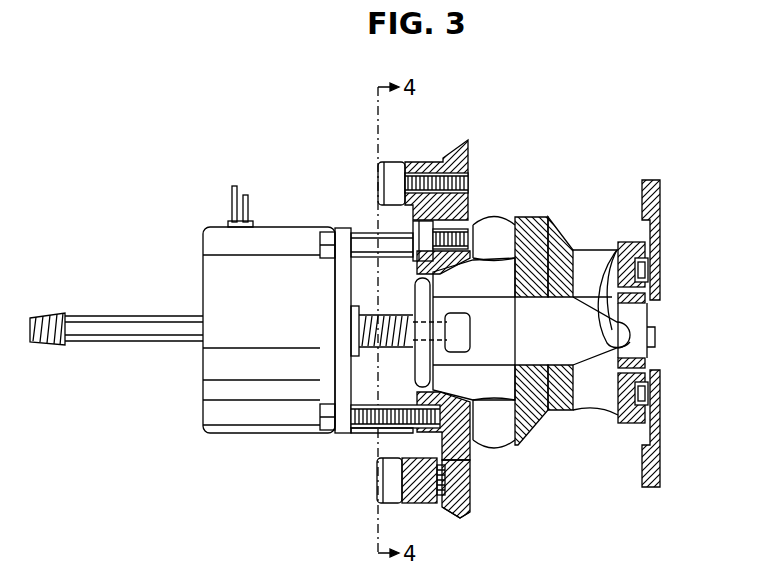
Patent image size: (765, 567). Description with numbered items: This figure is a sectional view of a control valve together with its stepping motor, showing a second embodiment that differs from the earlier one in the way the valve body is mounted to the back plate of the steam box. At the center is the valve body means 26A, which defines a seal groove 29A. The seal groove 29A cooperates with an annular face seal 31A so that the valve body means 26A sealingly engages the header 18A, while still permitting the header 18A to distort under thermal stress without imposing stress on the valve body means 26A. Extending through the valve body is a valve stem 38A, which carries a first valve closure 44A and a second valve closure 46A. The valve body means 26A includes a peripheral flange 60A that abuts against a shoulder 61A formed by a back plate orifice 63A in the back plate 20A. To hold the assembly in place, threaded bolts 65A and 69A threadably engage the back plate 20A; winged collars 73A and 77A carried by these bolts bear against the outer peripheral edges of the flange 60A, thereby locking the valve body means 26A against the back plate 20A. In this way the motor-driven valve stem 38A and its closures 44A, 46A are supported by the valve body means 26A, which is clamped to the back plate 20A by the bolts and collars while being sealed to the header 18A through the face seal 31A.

The threaded bolt 65A is at (391, 178).
The winged collar 73A is at (400, 222).
The back plate orifice 63A is at (468, 222).
The valve body means 26A is at (541, 264).
The seal groove 29A is at (629, 242).
The first valve closure 44A is at (616, 252).
The second valve closure 46A is at (393, 433).
The winged collar 77A is at (398, 452).
The shoulder 61A is at (459, 456).
The peripheral flange 60A is at (459, 471).
The threaded bolt 69A is at (392, 488).
The back plate 20A is at (457, 516).
The valve stem 38A is at (547, 417).
The annular face seal 31A is at (630, 425).
The header 18A is at (648, 483).